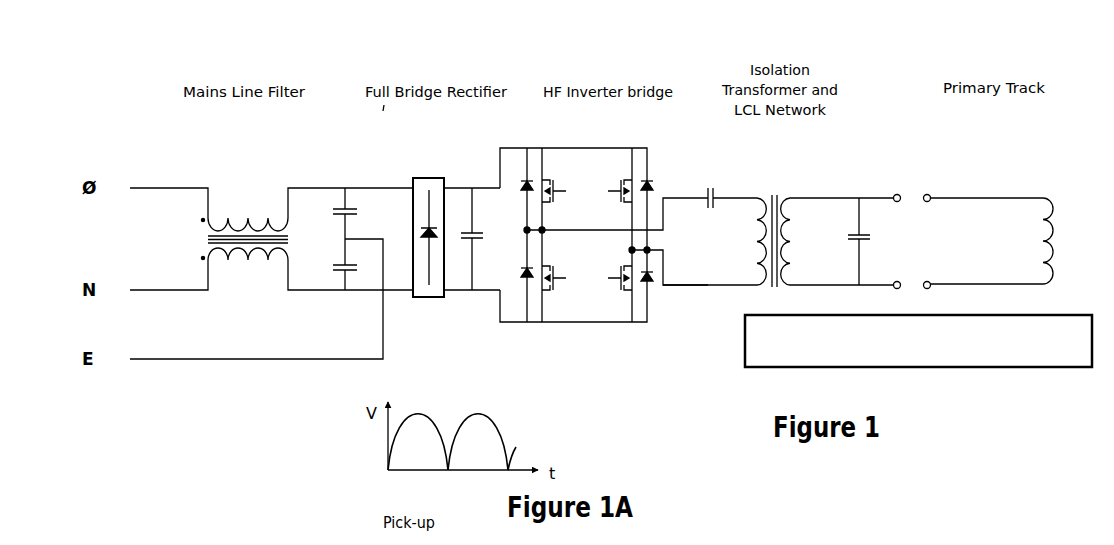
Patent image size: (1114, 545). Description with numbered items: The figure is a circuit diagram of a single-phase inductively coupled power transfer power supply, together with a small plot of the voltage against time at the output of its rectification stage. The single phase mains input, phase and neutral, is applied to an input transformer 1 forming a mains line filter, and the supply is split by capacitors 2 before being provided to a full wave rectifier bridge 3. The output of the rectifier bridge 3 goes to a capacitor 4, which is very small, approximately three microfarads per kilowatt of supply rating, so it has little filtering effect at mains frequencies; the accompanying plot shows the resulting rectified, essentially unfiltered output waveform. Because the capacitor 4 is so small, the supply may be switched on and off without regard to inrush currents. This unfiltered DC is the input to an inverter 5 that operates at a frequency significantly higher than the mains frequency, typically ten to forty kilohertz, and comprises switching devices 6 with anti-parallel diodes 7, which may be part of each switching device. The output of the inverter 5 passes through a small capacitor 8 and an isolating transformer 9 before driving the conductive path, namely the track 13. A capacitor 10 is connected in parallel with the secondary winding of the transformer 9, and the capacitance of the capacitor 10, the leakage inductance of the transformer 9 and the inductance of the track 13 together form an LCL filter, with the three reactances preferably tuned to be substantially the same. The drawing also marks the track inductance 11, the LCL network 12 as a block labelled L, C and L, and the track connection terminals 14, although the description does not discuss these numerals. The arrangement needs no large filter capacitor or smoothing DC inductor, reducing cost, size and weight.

The input transformer 1 is at (259, 217).
The capacitors 2 is at (336, 204).
The full wave rectifier bridge 3 is at (424, 221).
The capacitor 4 is at (455, 300).
The inverter 5 is at (587, 146).
The switching devices 6 is at (603, 303).
The anti-parallel diodes 7 is at (518, 195).
The capacitor 8 is at (719, 181).
The isolating transformer 9 is at (777, 185).
The capacitor 10 is at (839, 235).
The primary track inductance 11 is at (1063, 244).
The LCL network 12 is at (1039, 369).
The track 13 is at (993, 186).
The track connection terminal 14 is at (899, 189).